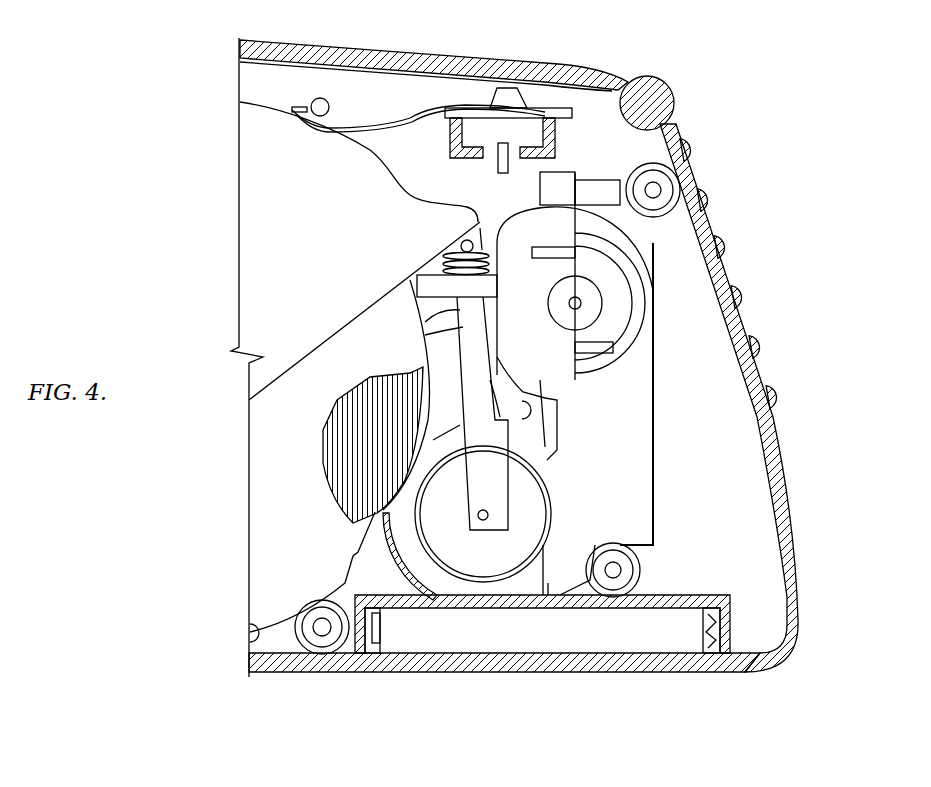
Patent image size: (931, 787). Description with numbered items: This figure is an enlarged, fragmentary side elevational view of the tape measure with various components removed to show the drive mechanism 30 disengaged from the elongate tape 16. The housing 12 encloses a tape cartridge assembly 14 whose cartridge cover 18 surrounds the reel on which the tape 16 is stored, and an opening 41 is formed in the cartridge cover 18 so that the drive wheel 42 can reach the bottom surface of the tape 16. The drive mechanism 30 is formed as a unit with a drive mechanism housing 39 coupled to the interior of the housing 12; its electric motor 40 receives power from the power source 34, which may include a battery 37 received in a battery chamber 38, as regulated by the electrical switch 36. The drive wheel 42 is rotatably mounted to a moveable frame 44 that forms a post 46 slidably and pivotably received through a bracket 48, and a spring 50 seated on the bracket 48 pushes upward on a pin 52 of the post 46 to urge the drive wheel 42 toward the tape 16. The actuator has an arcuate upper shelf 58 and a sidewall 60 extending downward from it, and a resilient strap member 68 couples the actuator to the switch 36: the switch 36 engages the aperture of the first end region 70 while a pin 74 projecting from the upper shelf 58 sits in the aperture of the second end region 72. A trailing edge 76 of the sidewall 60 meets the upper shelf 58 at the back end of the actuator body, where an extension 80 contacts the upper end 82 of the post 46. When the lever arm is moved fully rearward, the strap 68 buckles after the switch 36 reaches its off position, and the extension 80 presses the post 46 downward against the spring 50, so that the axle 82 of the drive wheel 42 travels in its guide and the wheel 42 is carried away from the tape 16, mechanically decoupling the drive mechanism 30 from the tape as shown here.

The housing 12 is at (790, 478).
The tape cartridge assembly 14 is at (254, 98).
The elongate tape 16 is at (385, 512).
The cartridge cover 18 is at (248, 640).
The drive mechanism 30 is at (680, 394).
The power source 34 is at (693, 597).
The electrical switch 36 is at (564, 130).
The battery 37 is at (638, 655).
The battery chamber 38 is at (672, 590).
The drive mechanism housing 39 is at (655, 467).
The electric motor 40 is at (603, 297).
The opening 41 is at (405, 502).
The drive wheel 42 is at (542, 624).
The moveable frame 44 is at (522, 428).
The post 46 is at (421, 329).
The bracket 48 is at (420, 272).
The spring 50 is at (440, 262).
The pin 52 is at (462, 246).
The upper shelf 58 is at (272, 107).
The sidewall 60 is at (245, 265).
The resilient strap member 68 is at (417, 97).
The first end region 70 is at (548, 108).
The second end region 72 is at (352, 118).
The pin 74 is at (333, 96).
The trailing edge 76 is at (330, 338).
The extension 80 is at (478, 225).
The upper end 82 is at (487, 240).